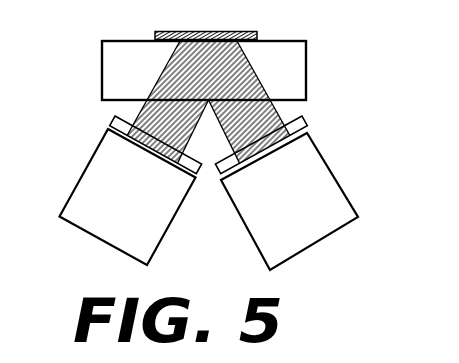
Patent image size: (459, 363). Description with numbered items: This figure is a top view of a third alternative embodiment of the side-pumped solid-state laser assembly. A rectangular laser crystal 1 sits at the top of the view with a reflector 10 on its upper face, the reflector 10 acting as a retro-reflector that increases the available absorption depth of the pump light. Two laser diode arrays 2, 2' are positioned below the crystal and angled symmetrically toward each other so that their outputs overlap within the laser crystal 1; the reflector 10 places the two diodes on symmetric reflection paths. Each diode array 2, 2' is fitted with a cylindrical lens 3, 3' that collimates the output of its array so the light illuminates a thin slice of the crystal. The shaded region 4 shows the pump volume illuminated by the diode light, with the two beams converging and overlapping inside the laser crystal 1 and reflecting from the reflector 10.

The laser crystal 1 is at (130, 41).
The reflector 10 is at (221, 31).
The pump volume 4 is at (229, 81).
The cylindrical lens 3 is at (132, 139).
The laser diode array 2 is at (117, 197).
The cylindrical lens 3' is at (283, 133).
The laser diode array 2' is at (299, 201).